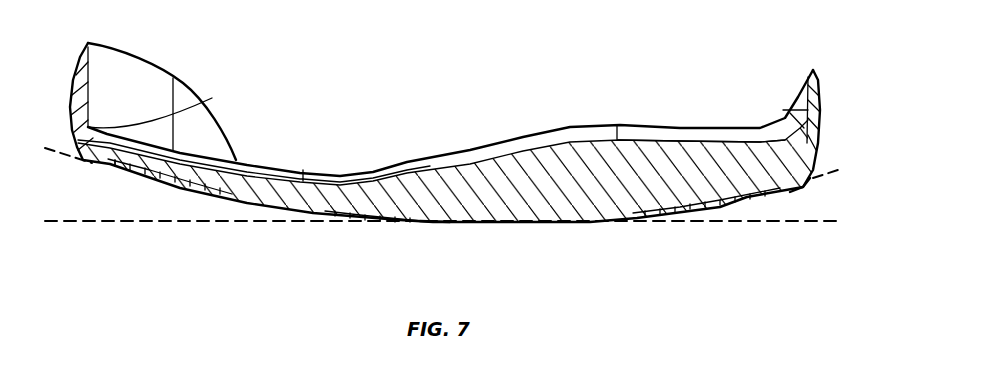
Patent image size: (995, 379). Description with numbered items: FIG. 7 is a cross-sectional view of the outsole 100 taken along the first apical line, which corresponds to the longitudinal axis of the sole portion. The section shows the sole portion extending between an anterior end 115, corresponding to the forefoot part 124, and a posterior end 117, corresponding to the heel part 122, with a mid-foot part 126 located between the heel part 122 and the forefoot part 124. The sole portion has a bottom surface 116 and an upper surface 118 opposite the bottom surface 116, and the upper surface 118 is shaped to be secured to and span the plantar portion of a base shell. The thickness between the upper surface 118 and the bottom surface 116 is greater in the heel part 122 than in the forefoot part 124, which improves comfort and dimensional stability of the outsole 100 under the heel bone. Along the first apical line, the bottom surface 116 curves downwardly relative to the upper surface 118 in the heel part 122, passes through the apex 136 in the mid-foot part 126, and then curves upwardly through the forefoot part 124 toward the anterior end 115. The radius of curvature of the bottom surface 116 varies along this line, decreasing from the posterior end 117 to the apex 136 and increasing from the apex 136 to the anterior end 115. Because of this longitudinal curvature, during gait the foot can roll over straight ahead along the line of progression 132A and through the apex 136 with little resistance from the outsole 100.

The outsole 100 is at (752, 30).
The anterior end 115 is at (87, 166).
The bottom surface 116 is at (435, 216).
The posterior end 117 is at (803, 185).
The upper surface 118 is at (522, 146).
The heel part 122 is at (730, 187).
The forefoot part 124 is at (255, 172).
The mid-foot part 126 is at (573, 190).
The line of progression 132A is at (97, 225).
The apex 136 is at (571, 230).